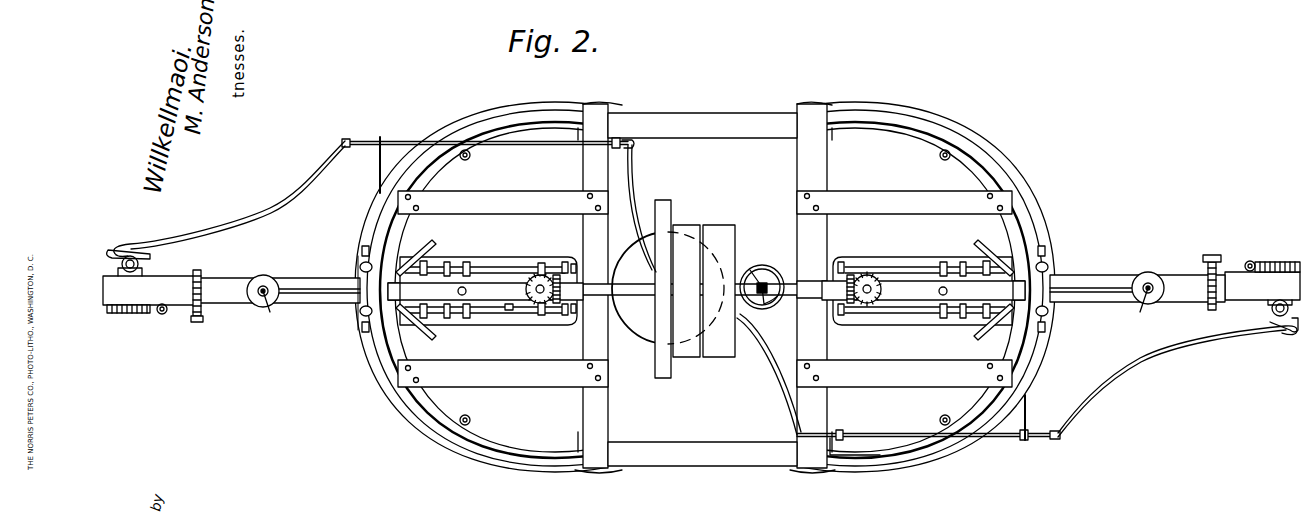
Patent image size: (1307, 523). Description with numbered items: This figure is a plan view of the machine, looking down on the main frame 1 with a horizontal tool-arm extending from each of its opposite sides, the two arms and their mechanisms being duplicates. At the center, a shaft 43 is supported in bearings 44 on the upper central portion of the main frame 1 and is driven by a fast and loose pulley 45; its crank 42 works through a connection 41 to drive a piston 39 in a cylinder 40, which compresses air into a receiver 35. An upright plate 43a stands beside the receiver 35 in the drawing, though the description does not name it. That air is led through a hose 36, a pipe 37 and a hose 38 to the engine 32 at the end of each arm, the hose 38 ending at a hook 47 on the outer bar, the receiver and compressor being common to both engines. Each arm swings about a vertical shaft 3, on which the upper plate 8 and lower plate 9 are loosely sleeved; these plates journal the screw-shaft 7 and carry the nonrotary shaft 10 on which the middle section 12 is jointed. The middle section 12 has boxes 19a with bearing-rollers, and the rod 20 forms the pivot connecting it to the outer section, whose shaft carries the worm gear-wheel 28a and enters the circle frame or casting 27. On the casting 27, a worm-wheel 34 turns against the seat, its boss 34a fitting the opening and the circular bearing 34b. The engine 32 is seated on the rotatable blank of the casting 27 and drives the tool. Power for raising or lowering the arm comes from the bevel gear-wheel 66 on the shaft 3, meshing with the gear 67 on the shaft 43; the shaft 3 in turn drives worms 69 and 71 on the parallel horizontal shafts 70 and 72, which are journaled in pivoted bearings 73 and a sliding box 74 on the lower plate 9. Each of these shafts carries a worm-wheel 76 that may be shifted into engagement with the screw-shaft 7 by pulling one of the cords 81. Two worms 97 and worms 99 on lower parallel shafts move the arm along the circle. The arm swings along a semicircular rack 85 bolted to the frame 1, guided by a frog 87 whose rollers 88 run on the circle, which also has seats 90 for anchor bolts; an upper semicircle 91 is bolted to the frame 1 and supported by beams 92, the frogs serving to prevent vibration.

The main frame 1 is at (705, 287).
The vertical shaft 3 is at (702, 289).
The screw-shaft 7 is at (458, 291).
The upper horizontal arm or plate 8 is at (706, 290).
The lower horizontal arm or plate 9 is at (528, 256).
The third shaft 10 is at (400, 291).
The middle section 12 is at (311, 278).
The upper and lower boxes 19a is at (710, 307).
The rod or shaft 20 is at (265, 282).
The circle frame or casting 27 is at (701, 288).
The worm gear-wheel 28a is at (198, 270).
The engine 32 is at (140, 268).
The worm-wheel 34 is at (135, 316).
The boss 34a is at (163, 314).
The circular bearing 34b is at (1250, 261).
The receiver 35 is at (640, 288).
The hose or pipe 36 is at (632, 183).
The pipe 37 is at (525, 144).
The hose 38 is at (705, 289).
The piston 39 is at (770, 280).
The cylinder 40 is at (766, 262).
The connection 41 is at (750, 268).
The crank 42 is at (773, 303).
The shaft 43 is at (673, 280).
The upright plate 43a is at (671, 210).
The bearings 44 is at (708, 292).
The fast and loose pulley 45 is at (708, 285).
The hook 47 is at (1285, 330).
The bevel gear-wheel 66 is at (552, 303).
The gear 67 is at (565, 315).
The worm 69 is at (541, 315).
The horizontal shaft 70 is at (492, 314).
The worm 71 is at (543, 263).
The shaft 72 is at (516, 266).
The pivoted bearings 73 is at (573, 264).
The box 74 is at (450, 266).
The worm-wheel 76 is at (470, 266).
The cords or cables 81 is at (420, 250).
The semicircular rack 85 is at (385, 385).
The frog 87 is at (358, 315).
The rollers 88 is at (362, 250).
The seats 90 is at (470, 158).
The upper semicircle 91 is at (430, 420).
The beams 92 is at (705, 289).
The worms 97 is at (428, 266).
The worm 99 is at (509, 310).